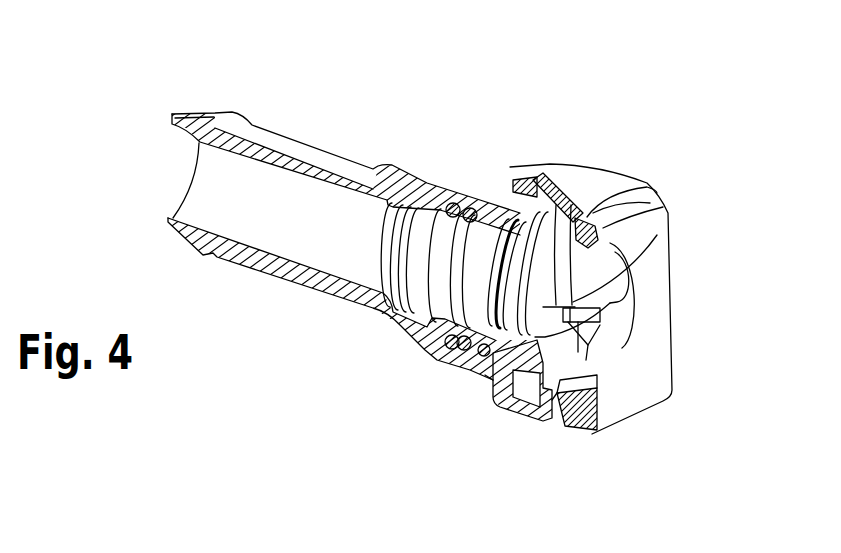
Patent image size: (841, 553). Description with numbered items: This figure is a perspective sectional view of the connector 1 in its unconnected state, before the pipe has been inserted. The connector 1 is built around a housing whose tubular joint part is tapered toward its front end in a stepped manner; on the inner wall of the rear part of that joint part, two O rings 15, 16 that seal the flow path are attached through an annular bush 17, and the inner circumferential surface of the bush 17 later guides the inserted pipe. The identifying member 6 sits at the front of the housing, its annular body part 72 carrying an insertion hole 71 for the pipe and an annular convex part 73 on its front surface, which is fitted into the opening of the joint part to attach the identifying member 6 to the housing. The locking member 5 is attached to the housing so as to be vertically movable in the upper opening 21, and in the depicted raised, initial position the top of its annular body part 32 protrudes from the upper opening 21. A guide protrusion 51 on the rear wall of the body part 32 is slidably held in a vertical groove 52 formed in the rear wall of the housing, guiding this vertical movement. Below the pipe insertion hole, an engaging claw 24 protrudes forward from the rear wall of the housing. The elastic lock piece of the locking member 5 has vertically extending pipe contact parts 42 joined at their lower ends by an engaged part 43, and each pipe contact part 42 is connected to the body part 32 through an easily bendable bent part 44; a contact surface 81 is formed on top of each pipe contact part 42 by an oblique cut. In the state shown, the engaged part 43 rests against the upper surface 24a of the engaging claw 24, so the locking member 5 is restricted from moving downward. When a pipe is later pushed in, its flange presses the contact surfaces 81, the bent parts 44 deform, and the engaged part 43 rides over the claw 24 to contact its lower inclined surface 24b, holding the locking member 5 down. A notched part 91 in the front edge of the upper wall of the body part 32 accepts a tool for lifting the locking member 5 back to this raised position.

The connector 1 is at (388, 64).
The locking member 5 is at (660, 161).
The identifying member 6 is at (544, 214).
The O ring 15 is at (450, 206).
The O ring 16 is at (492, 212).
The annular bush 17 is at (470, 210).
The upper opening 21 is at (535, 213).
The engaging claw 24 is at (575, 435).
The upper surface of the engaging claw 24a is at (565, 396).
The lower inclined surface of the engaging claw 24b is at (560, 422).
The annular body part 32 is at (588, 173).
The pipe contact part 42 is at (605, 355).
The engaged part 43 is at (530, 406).
The bent part 44 is at (613, 272).
The guide protrusion 51 is at (620, 235).
The vertical groove 52 is at (657, 210).
The insertion hole 71 is at (422, 300).
The annular body part 72 is at (488, 377).
The annular convex part 73 is at (500, 360).
The contact surface 81 is at (600, 312).
The notched part 91 is at (522, 205).